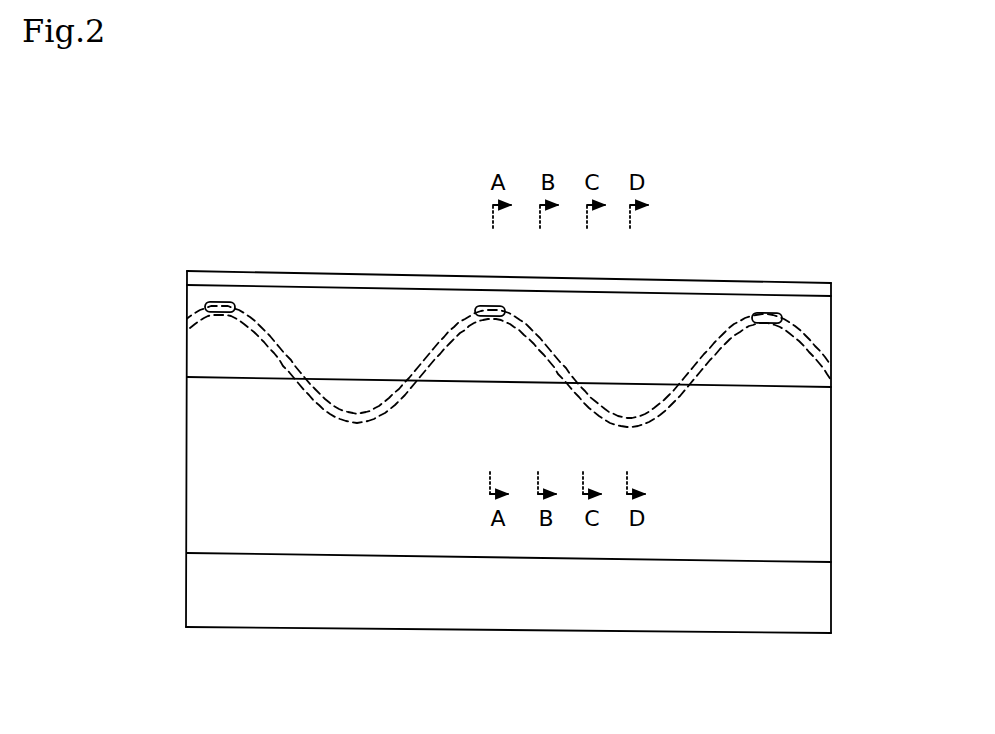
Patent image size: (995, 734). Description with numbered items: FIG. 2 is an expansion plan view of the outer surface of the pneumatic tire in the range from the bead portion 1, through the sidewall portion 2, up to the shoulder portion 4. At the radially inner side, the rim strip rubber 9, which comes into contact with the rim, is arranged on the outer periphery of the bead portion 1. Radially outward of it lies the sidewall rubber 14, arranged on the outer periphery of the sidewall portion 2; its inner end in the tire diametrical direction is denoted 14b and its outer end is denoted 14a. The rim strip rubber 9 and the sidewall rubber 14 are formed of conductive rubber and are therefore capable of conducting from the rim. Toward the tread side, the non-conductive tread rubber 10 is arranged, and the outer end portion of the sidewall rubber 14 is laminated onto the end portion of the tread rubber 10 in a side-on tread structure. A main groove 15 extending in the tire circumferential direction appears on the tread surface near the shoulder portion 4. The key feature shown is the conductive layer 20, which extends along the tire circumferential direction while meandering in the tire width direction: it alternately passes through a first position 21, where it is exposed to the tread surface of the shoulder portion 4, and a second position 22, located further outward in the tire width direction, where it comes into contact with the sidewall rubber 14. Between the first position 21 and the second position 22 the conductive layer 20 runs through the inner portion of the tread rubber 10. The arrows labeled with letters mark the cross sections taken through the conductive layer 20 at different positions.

The bead portion 1 is at (839, 600).
The sidewall portion 2 is at (841, 476).
The shoulder portion 4 is at (846, 338).
The rim strip rubber 9 is at (284, 612).
The tread rubber 10 is at (200, 348).
The sidewall rubber 14 is at (369, 545).
The outer end of sidewall rubber 14a is at (455, 385).
The inner end of sidewall rubber 14b is at (447, 557).
The main groove 15 is at (717, 288).
The conductive layer 20 is at (418, 362).
The first position 21 is at (228, 304).
The second position 22 is at (352, 422).